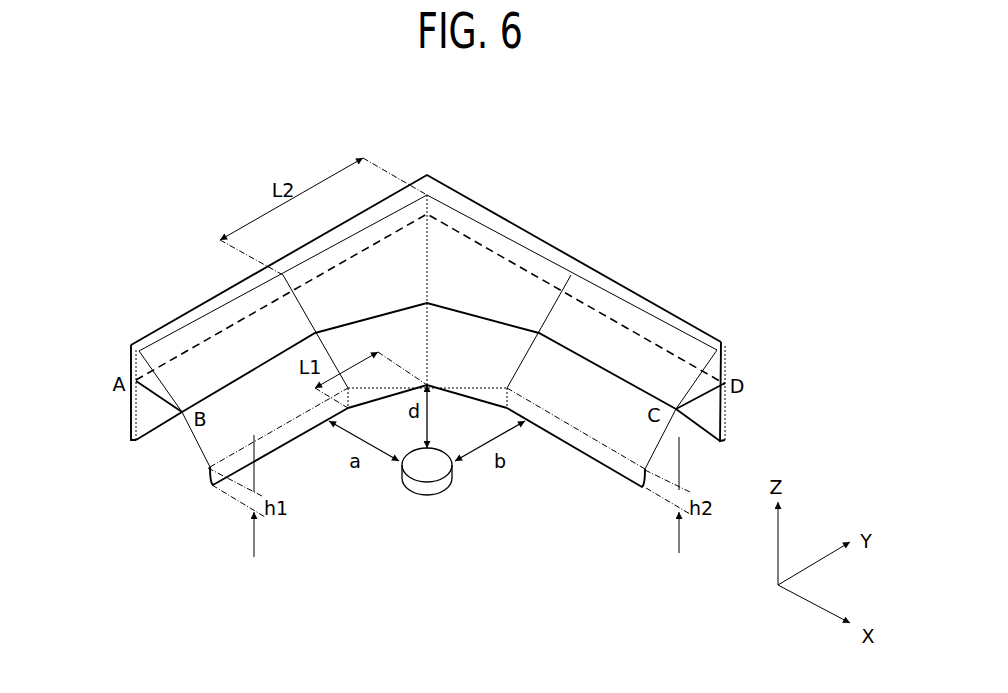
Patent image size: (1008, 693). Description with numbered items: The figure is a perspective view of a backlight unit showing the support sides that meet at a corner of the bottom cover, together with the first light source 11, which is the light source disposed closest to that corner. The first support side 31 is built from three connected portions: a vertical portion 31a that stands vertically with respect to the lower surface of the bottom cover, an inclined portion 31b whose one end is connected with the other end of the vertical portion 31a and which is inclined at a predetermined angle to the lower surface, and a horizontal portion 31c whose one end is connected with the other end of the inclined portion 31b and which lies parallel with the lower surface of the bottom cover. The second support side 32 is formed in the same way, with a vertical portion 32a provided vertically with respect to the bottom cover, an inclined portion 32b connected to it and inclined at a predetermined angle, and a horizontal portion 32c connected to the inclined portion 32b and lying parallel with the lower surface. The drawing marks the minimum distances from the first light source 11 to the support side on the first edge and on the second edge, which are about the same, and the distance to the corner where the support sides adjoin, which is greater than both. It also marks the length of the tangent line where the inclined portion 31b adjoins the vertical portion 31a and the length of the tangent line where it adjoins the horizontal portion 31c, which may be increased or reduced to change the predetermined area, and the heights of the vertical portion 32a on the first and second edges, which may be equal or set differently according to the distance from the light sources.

The first light source 11 is at (432, 474).
The first support side 31 is at (428, 256).
The vertical portion 31a is at (378, 386).
The inclined portion 31b is at (393, 270).
The horizontal portion 31c is at (367, 207).
The second support side 32 is at (409, 463).
The vertical portion 32a is at (268, 482).
The inclined portion 32b is at (187, 440).
The horizontal portion 32c is at (147, 344).